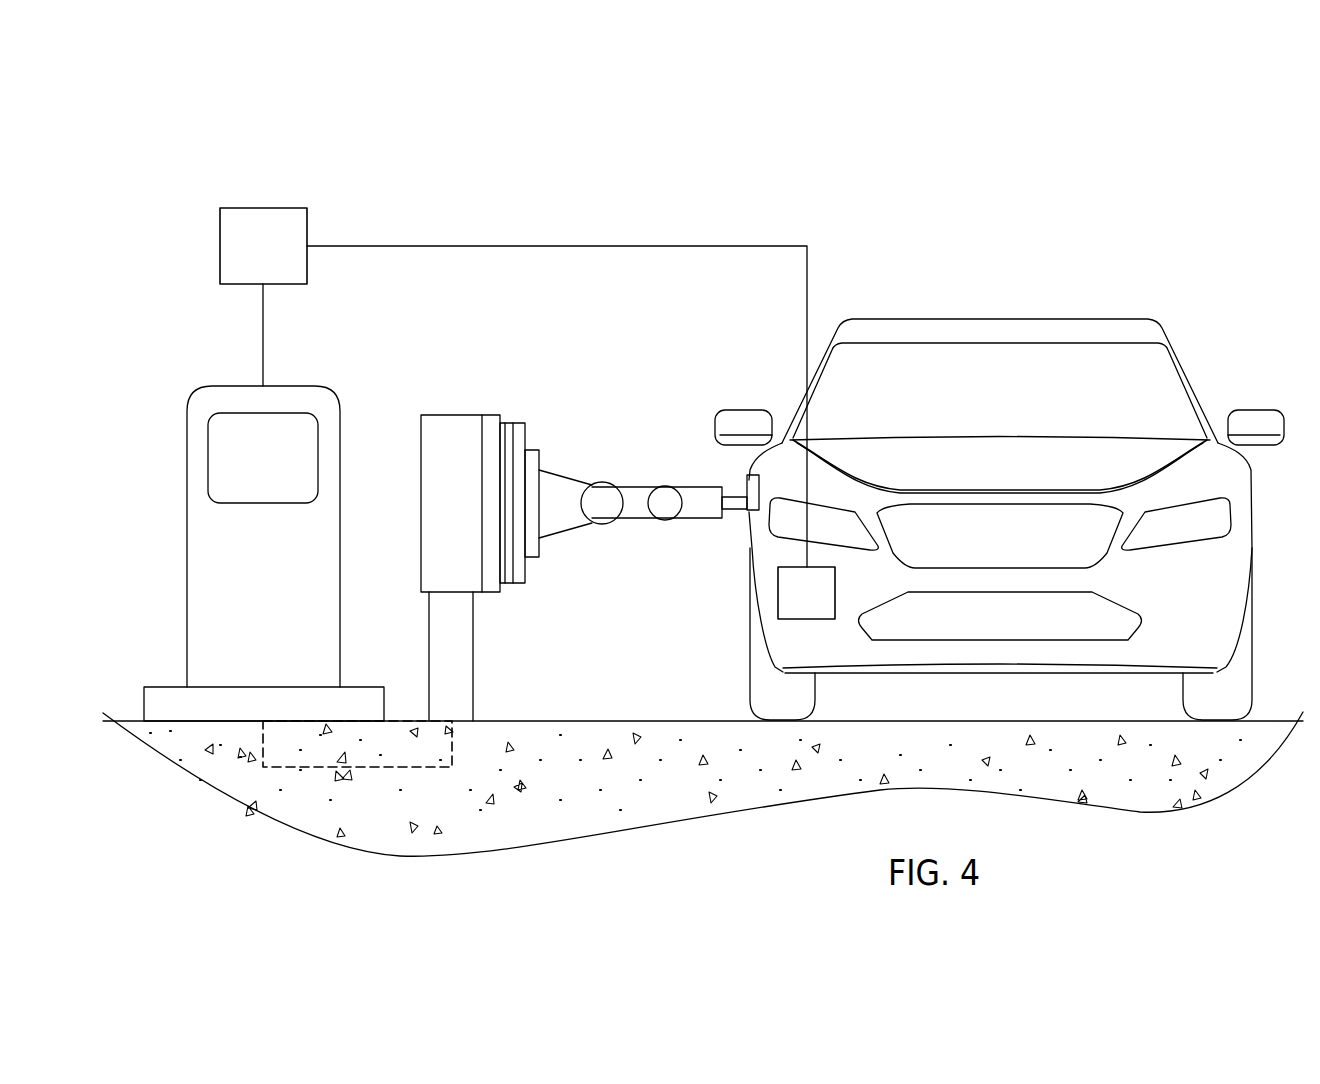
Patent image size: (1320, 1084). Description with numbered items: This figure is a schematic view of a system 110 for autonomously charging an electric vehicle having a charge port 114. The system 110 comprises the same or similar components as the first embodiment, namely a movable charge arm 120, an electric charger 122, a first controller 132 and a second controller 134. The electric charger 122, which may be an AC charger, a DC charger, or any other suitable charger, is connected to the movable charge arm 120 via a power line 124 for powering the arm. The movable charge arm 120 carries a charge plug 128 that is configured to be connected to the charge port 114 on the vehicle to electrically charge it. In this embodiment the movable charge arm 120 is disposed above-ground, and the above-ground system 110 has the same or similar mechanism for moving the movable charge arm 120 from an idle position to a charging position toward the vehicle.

The system 110 is at (403, 160).
The charge port 114 is at (747, 485).
The movable charge arm 120 is at (638, 519).
The electric charger 122 is at (189, 537).
The power line 124 is at (452, 745).
The charge plug 128 is at (735, 511).
The first controller 132 is at (220, 226).
The second controller 134 is at (790, 598).